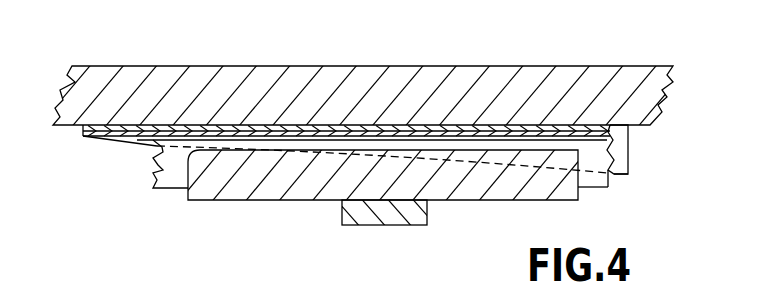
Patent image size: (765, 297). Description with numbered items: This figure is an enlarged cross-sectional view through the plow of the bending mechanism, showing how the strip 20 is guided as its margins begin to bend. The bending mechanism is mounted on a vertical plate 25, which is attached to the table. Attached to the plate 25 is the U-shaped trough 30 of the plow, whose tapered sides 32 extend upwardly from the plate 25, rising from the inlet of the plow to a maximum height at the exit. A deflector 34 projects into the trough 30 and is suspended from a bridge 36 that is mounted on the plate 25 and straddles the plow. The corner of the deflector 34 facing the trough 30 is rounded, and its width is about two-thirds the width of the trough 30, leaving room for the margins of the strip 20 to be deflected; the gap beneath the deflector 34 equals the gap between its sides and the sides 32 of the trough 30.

The vertical plate 25 is at (333, 77).
The strip 20 is at (163, 168).
The U-shaped trough 30 is at (634, 145).
The tapered sides 32 is at (622, 164).
The deflector 34 is at (268, 190).
The bridge 36 is at (393, 212).